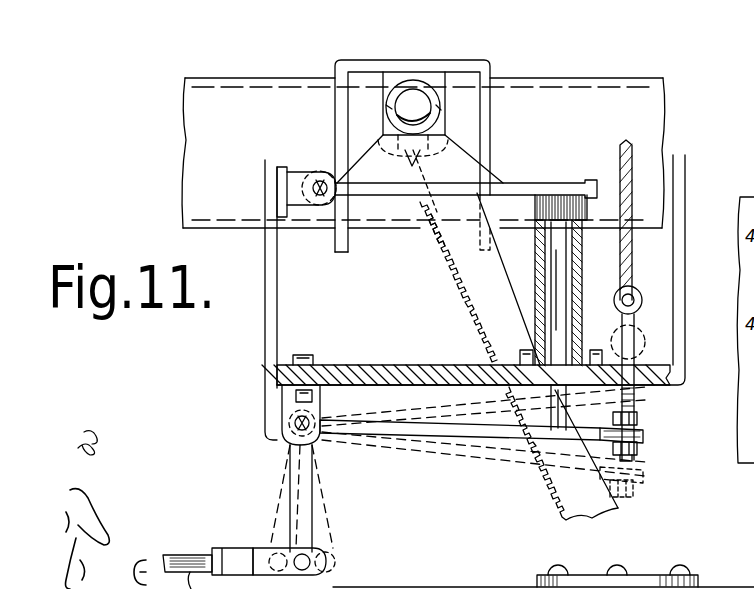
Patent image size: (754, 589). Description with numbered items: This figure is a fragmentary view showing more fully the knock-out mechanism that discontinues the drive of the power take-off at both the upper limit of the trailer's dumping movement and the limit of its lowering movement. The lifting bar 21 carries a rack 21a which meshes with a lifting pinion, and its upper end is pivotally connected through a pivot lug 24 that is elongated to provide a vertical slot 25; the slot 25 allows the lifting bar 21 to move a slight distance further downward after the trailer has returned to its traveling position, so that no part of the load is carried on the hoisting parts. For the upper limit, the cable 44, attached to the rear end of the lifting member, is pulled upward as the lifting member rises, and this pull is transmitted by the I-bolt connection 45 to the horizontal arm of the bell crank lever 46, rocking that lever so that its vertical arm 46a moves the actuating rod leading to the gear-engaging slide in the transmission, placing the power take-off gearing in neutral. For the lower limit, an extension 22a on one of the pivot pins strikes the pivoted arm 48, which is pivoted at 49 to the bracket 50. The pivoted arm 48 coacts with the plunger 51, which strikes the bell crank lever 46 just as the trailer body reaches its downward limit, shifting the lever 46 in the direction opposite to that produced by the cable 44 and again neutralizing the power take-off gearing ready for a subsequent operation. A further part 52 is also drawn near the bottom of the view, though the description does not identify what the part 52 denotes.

The lifting bar 21 is at (470, 285).
The rack 21a is at (443, 251).
The extension on pivot pin 22a is at (413, 100).
The pivot lug 24 is at (443, 96).
The vertical slot 25 is at (405, 162).
The cable 44 is at (630, 205).
The I-bolt connection 45 is at (634, 320).
The bell crank lever 46 is at (460, 428).
The vertical arm of bell crank lever 46a is at (308, 505).
The pivoted arm 48 is at (525, 190).
The pivot 49 is at (318, 178).
The bracket 50 is at (292, 187).
The plunger 51 is at (561, 279).
The base plate 52 is at (645, 586).